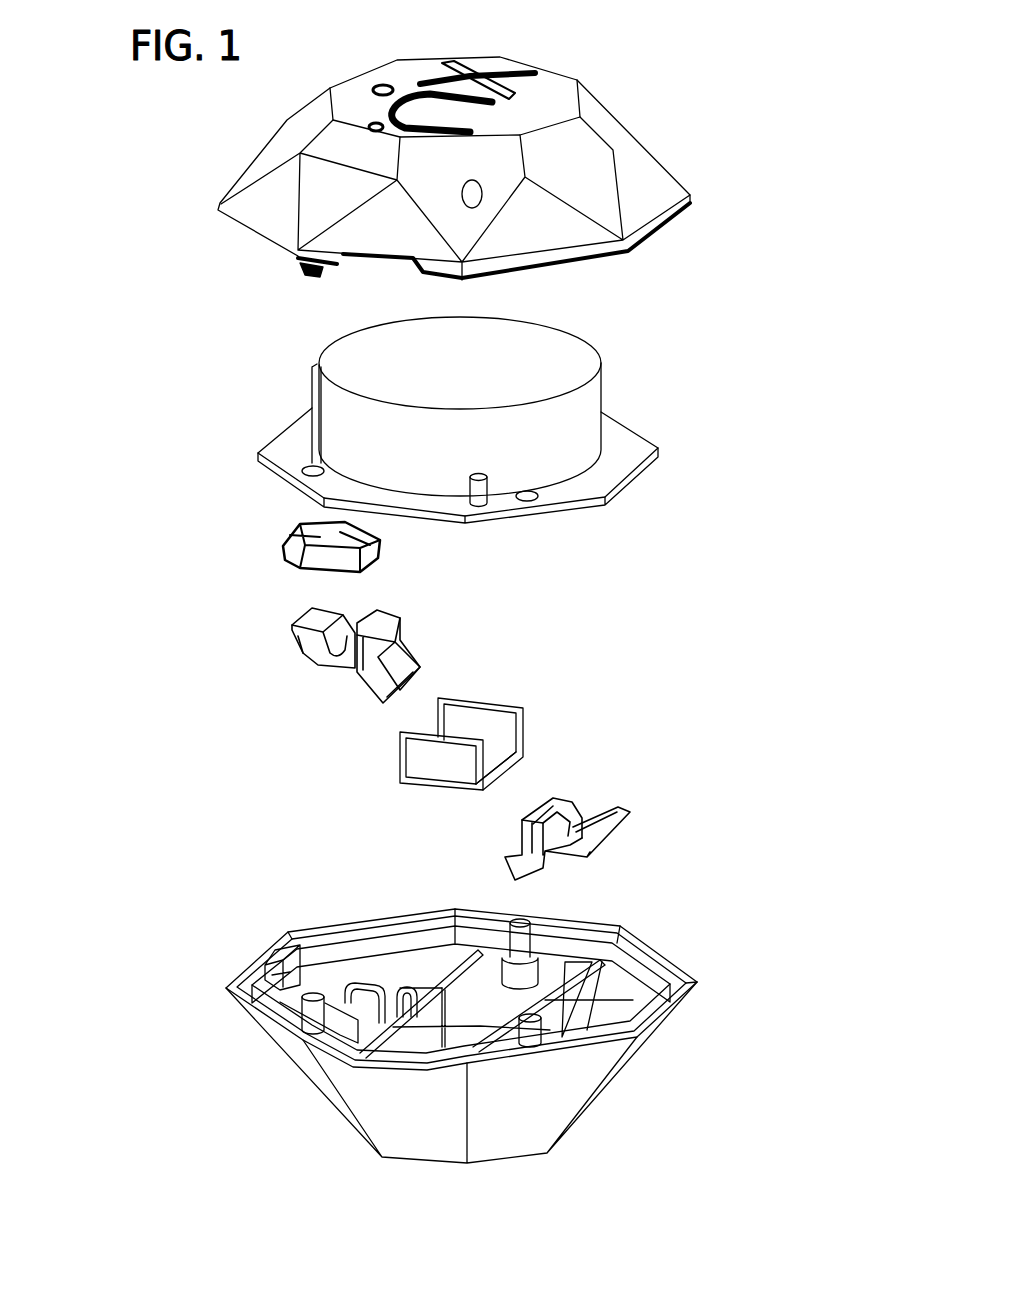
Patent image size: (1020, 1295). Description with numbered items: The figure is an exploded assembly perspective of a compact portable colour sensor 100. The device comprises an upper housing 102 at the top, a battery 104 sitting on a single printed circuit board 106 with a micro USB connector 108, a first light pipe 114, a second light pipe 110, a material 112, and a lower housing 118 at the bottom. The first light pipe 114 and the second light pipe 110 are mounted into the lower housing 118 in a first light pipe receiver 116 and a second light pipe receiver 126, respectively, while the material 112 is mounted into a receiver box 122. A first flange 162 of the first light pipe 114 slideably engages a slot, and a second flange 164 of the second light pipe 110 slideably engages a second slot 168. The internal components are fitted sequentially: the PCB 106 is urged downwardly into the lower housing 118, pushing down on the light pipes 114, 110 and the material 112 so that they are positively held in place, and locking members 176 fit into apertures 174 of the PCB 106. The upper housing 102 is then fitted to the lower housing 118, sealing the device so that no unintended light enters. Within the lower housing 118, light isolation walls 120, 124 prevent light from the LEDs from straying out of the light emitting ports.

The colour sensor 100 is at (180, 170).
The upper housing 102 is at (597, 117).
The battery 104 is at (580, 404).
The printed circuit board 106 is at (633, 457).
The micro USB connector 108 is at (287, 541).
The second light pipe 110 is at (310, 647).
The material 112 is at (492, 717).
The first light pipe 114 is at (585, 840).
The first light pipe receiver 116 is at (583, 1022).
The lower housing 118 is at (307, 1067).
The light isolation wall 120 is at (423, 1043).
The receiver box 122 is at (463, 1010).
The light isolation wall 124 is at (425, 1010).
The second light pipe receiver 126 is at (350, 1000).
The first flange 162 is at (547, 807).
The second flange 164 is at (347, 667).
The second slot 168 is at (273, 960).
The apertures 174 is at (530, 498).
The locking members 176 is at (522, 940).